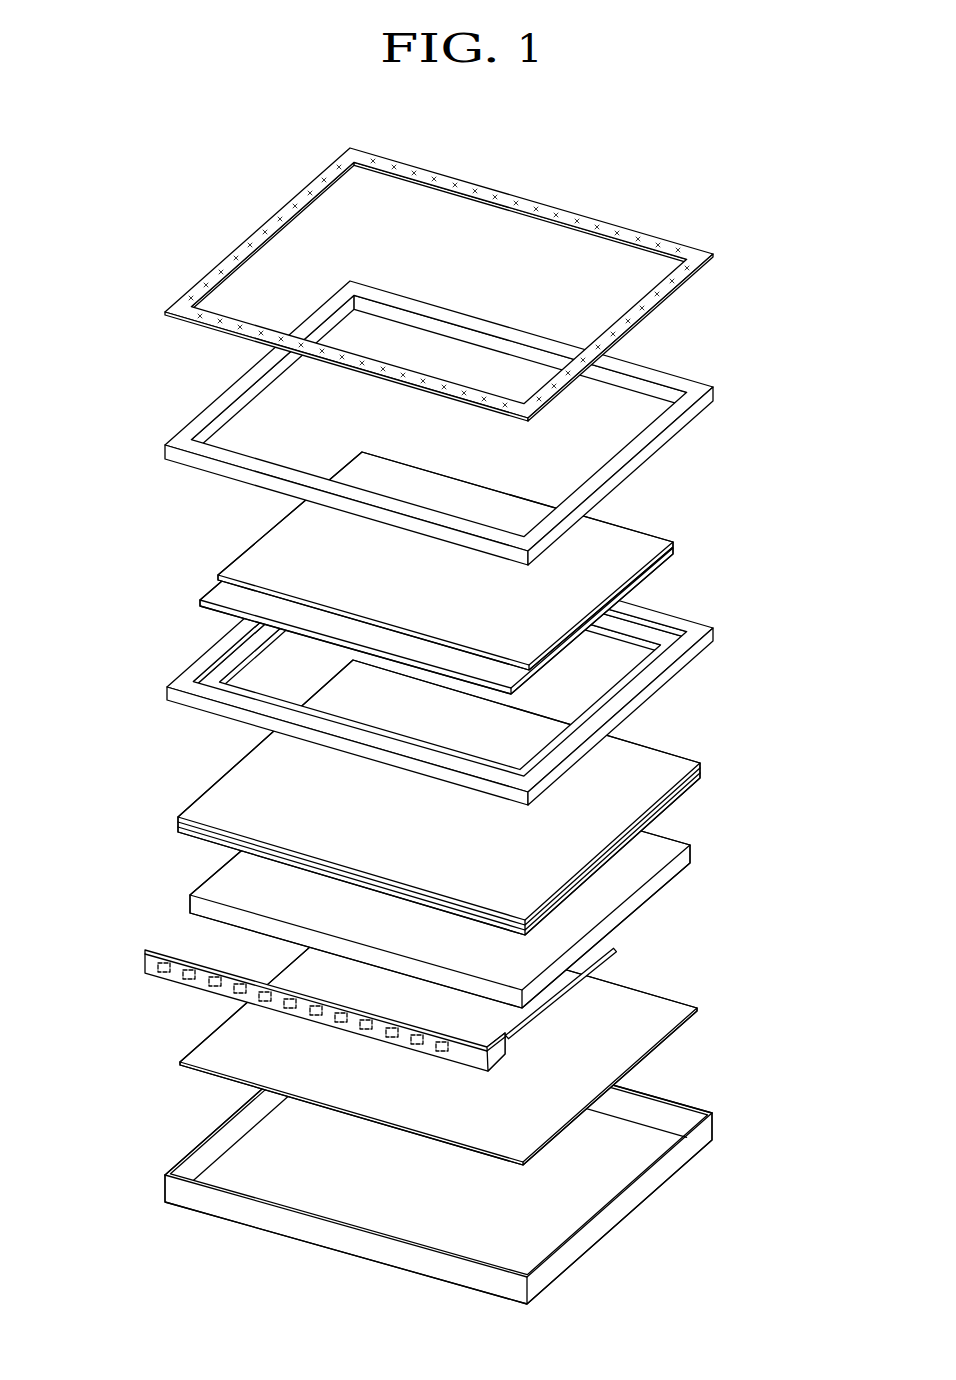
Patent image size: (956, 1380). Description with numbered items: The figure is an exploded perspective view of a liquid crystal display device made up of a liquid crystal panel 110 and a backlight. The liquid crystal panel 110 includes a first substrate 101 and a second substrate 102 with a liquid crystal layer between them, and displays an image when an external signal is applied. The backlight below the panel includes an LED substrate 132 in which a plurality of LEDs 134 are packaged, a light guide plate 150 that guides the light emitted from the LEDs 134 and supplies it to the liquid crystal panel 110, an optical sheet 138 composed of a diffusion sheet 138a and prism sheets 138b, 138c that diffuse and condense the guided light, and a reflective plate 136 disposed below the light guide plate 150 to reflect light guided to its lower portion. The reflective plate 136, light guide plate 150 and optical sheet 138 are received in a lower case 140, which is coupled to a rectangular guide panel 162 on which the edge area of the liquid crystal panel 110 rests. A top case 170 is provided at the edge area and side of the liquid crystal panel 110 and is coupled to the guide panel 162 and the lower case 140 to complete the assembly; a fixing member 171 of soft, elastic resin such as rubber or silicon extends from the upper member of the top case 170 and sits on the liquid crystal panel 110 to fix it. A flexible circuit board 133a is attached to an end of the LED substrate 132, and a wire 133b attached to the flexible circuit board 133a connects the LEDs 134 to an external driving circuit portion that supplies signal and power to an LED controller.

The fixing member 171 is at (713, 254).
The top case 170 is at (714, 394).
The liquid crystal panel 110 is at (502, 573).
The second substrate 102 is at (676, 540).
The first substrate 101 is at (676, 553).
The guide panel 162 is at (716, 631).
The optical sheet 138 is at (522, 797).
The diffusion sheet 138a is at (704, 778).
The prism sheet 138b is at (705, 769).
The prism sheet 138c is at (703, 761).
The light guide plate 150 is at (666, 847).
The wire 133b is at (618, 955).
The flexible circuit board 133a is at (508, 1058).
The reflective plate 136 is at (675, 1017).
The lower case 140 is at (690, 1107).
The LED substrate 132 is at (283, 1006).
The LEDs 134 is at (165, 972).